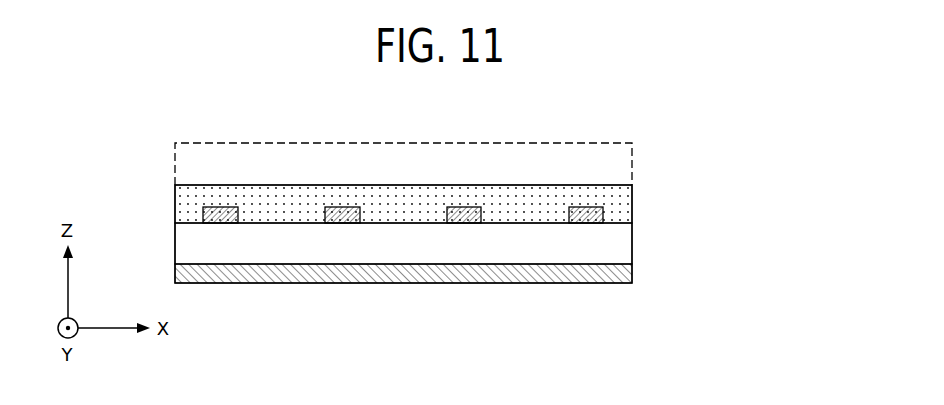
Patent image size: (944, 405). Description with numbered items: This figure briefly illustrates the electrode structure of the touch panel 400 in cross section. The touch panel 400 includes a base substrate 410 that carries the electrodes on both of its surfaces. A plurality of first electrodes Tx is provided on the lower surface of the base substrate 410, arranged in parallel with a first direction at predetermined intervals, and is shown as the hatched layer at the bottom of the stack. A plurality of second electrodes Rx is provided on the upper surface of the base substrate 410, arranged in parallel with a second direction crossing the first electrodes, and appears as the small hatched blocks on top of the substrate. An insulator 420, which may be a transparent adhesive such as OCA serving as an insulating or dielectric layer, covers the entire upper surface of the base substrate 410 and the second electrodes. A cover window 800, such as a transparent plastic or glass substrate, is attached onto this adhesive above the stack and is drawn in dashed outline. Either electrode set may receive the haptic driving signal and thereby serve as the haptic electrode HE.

The cover window 800 is at (182, 162).
The touch panel 400 is at (795, 165).
The insulator 420 is at (627, 205).
The base substrate 410 is at (627, 248).